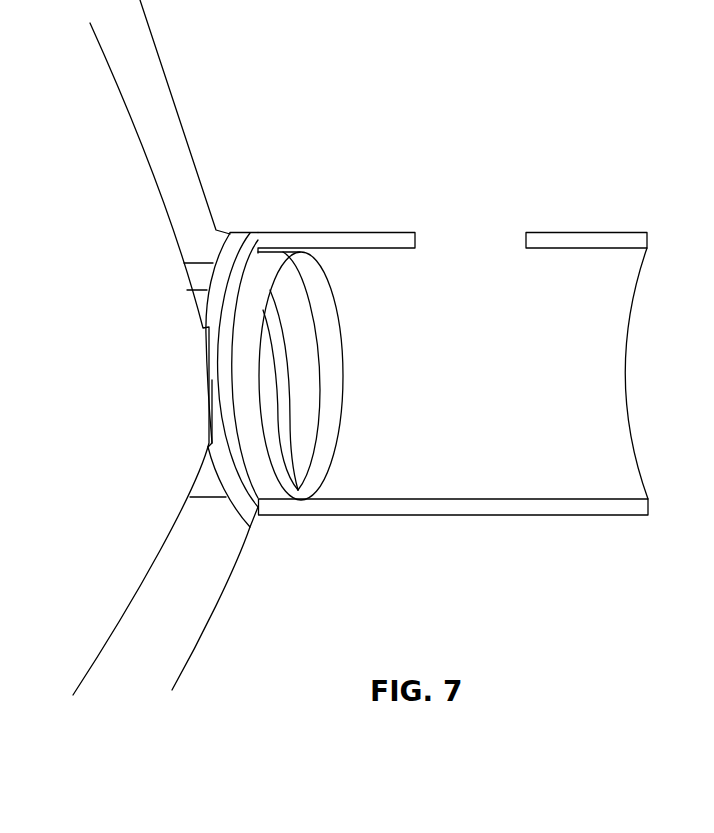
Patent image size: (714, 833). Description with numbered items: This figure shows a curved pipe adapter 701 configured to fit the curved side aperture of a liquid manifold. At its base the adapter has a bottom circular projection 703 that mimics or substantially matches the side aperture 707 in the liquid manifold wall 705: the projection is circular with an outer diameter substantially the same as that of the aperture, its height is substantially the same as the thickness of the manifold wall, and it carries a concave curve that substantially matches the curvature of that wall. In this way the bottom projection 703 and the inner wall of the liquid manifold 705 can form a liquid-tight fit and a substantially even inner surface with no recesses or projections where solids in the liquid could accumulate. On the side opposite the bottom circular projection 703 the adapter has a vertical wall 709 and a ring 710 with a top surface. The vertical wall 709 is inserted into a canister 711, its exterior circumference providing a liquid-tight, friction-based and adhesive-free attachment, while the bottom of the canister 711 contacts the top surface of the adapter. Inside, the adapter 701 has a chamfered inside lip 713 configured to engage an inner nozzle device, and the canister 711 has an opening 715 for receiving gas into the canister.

The curved pipe adapter 701 is at (370, 300).
The bottom circular projection 703 is at (190, 290).
The liquid manifold wall 705 is at (185, 113).
The side aperture 707 is at (214, 412).
The vertical wall 709 is at (272, 485).
The ring 710 is at (238, 243).
The canister 711 is at (593, 242).
The chamfered inside lip 713 is at (305, 448).
The opening 715 is at (492, 248).